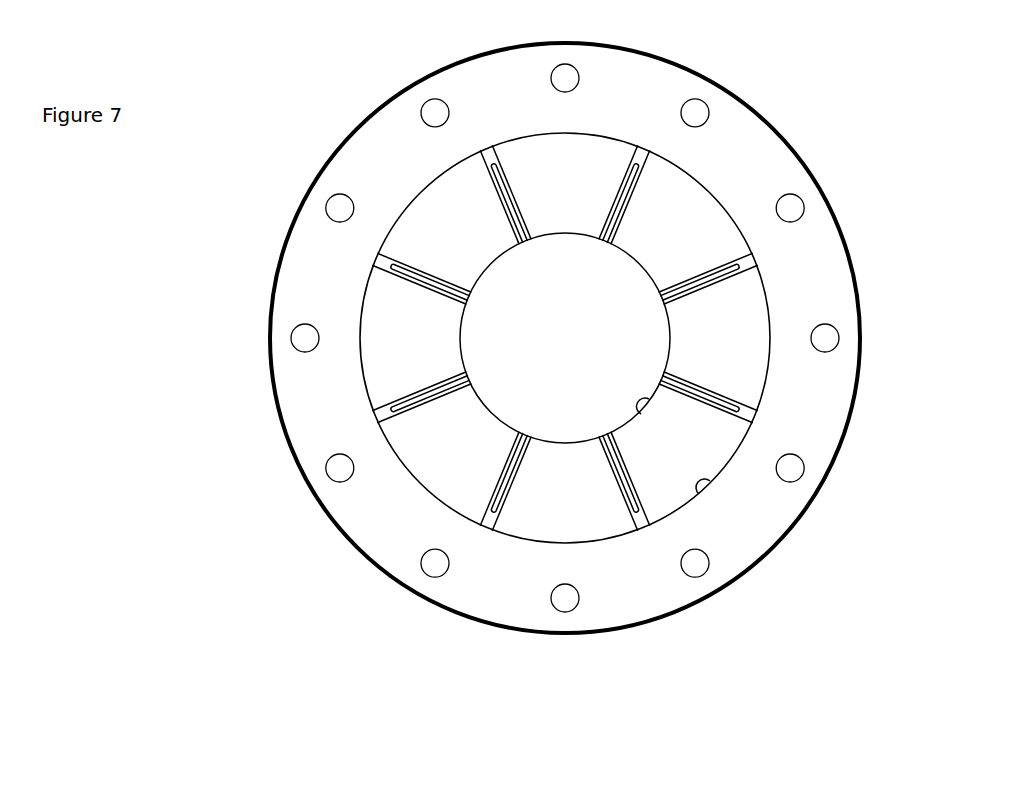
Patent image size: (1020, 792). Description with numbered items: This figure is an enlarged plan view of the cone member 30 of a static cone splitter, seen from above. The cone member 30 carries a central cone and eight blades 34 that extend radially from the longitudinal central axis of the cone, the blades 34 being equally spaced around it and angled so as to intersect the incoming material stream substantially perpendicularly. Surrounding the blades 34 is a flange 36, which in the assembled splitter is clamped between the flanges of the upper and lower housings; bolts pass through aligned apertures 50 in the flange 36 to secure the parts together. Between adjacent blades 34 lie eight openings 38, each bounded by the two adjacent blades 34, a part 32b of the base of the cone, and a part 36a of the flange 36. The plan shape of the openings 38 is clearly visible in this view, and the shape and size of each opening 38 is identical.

The cone member 30 is at (182, 478).
The part of the base of the cone 32b is at (646, 402).
The blades 34 is at (752, 411).
The flange 36 is at (770, 160).
The part of the flange 36a is at (706, 488).
The openings 38 is at (688, 212).
The apertures 50 is at (797, 205).